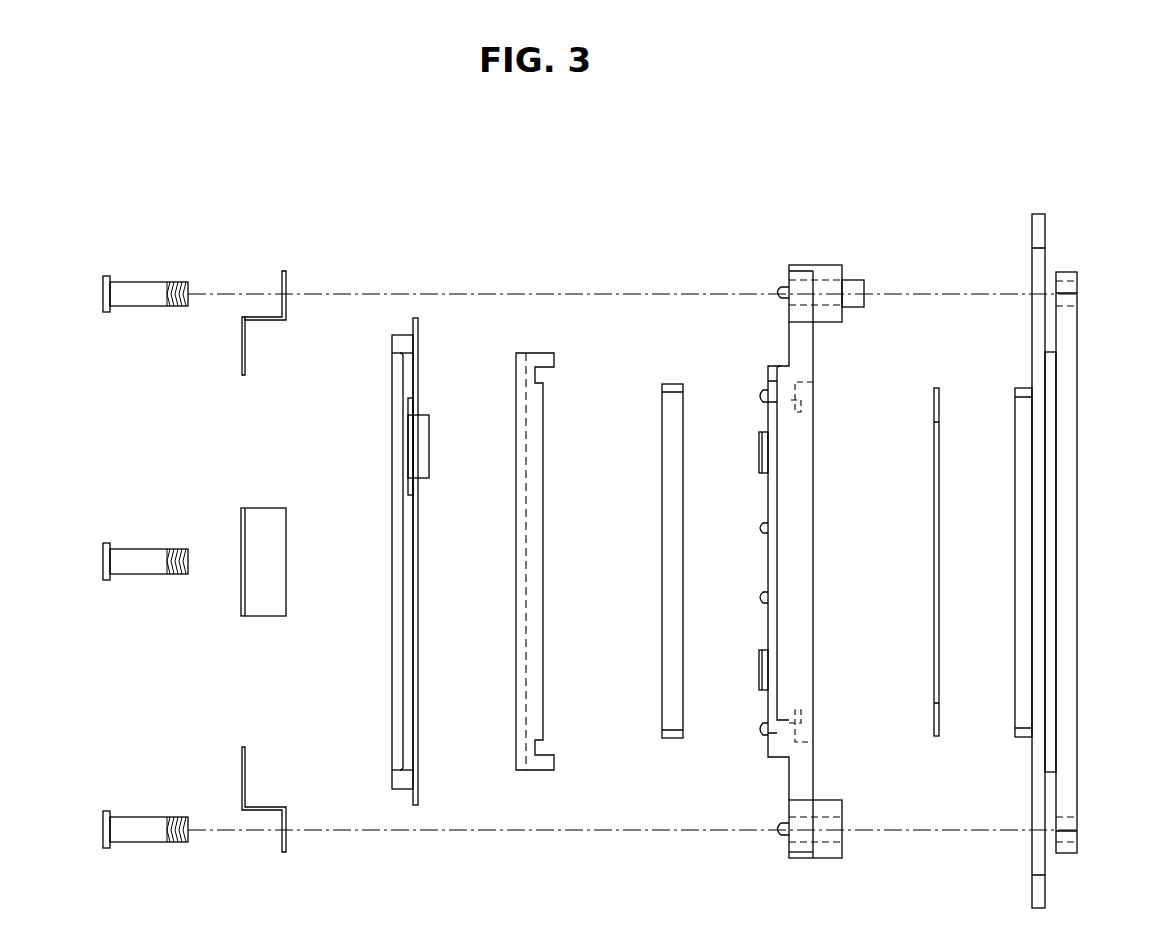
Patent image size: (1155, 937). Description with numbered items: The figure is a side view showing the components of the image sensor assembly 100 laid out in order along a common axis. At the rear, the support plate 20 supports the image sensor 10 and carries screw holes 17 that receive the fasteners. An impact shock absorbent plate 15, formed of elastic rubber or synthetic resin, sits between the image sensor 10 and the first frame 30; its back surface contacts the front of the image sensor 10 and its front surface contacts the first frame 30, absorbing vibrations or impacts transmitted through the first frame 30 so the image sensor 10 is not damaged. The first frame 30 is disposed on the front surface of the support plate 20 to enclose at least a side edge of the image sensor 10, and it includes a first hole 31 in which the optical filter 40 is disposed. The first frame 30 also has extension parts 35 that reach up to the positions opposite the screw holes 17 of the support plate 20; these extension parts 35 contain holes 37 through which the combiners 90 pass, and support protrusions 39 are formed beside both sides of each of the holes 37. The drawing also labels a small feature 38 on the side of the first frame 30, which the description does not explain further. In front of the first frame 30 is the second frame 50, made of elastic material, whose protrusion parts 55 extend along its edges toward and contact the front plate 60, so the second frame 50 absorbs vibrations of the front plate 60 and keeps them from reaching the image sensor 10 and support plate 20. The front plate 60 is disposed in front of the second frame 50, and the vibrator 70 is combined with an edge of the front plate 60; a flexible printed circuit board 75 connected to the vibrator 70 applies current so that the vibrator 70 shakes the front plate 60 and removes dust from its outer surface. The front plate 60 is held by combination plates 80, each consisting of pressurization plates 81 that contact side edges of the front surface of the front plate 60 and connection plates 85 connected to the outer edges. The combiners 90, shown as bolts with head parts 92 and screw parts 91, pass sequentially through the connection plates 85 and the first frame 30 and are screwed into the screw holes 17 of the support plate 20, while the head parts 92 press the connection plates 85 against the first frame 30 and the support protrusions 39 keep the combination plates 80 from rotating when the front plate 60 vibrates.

The image sensor assembly 100 is at (233, 137).
The combiners 90 is at (62, 214).
The screw parts 91 is at (137, 290).
The head parts 92 is at (105, 277).
The combination plates 80 is at (338, 367).
The pressurization plates 81 is at (243, 373).
The connection plates 85 is at (285, 319).
The vibrator 70 is at (396, 330).
The flexible printed circuit board 75 is at (419, 378).
The front plate 60 is at (386, 480).
The second frame 50 is at (546, 345).
The protrusion parts 55 is at (527, 383).
The optical filter 40 is at (666, 376).
The first frame 30 is at (819, 257).
The first hole 31 is at (790, 403).
The extension parts 35 is at (800, 337).
The holes 37 is at (838, 302).
The hook 38 is at (758, 604).
The support protrusions 39 is at (783, 286).
The impact shock absorbent plate 15 is at (937, 380).
The image sensor 10 is at (1008, 745).
The support plate 20 is at (1055, 217).
The screw holes 17 is at (1072, 283).